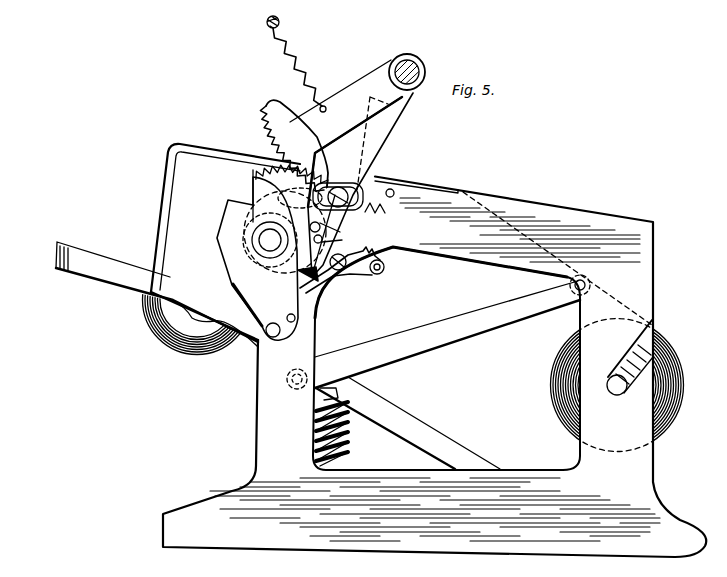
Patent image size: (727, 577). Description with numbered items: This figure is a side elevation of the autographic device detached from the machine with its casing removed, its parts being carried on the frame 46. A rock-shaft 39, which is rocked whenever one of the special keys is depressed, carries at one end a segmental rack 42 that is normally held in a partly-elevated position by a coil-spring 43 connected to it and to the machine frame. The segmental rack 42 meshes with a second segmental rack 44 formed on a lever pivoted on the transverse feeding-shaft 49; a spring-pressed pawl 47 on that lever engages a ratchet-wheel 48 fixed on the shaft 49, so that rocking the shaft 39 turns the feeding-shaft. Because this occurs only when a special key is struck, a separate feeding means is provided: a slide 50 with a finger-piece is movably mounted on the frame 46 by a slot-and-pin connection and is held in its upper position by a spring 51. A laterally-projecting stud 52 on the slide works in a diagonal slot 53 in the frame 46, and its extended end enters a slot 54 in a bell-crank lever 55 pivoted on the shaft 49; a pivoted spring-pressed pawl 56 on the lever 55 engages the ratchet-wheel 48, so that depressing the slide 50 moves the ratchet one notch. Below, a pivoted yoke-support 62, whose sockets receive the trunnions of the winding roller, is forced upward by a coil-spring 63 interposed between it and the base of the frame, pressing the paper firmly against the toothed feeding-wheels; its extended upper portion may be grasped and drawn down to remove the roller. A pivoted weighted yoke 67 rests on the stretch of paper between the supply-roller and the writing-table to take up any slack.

The rock-shaft 39 is at (416, 66).
The segmental rack 42 is at (366, 78).
The coil-spring 43 is at (303, 57).
The segmental rack 44 is at (255, 178).
The frame 46 is at (220, 212).
The spring-pressed pawl 47 is at (238, 288).
The ratchet-wheel 48 is at (222, 246).
The feeding-shaft 49 is at (270, 252).
The slide 50 is at (382, 129).
The spring 51 is at (374, 226).
The laterally-projecting stud 52 is at (365, 183).
The diagonal slot 53 is at (318, 285).
The slot 54 is at (332, 185).
The bell-crank lever 55 is at (381, 273).
The spring-pressed pawl 56 is at (348, 236).
The yoke-support 62 is at (122, 283).
The coil-spring 63 is at (350, 444).
The weighted yoke 67 is at (448, 322).